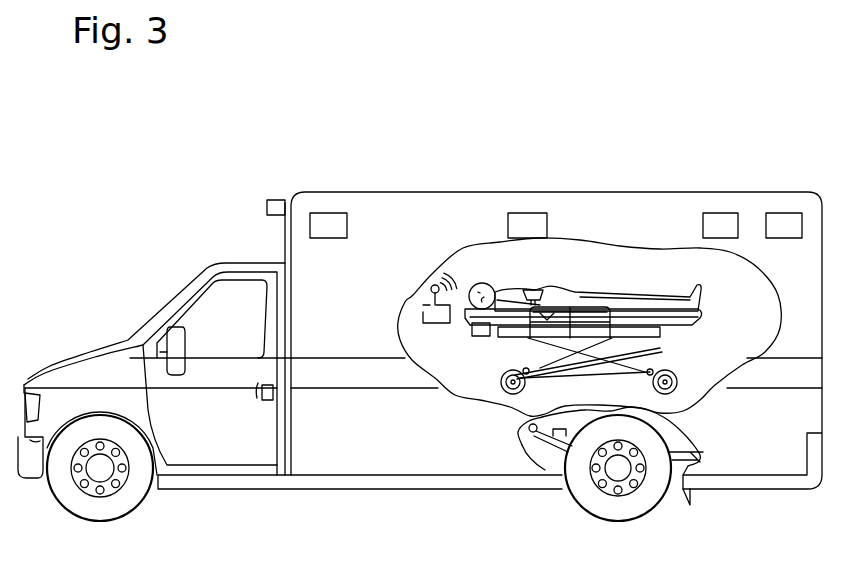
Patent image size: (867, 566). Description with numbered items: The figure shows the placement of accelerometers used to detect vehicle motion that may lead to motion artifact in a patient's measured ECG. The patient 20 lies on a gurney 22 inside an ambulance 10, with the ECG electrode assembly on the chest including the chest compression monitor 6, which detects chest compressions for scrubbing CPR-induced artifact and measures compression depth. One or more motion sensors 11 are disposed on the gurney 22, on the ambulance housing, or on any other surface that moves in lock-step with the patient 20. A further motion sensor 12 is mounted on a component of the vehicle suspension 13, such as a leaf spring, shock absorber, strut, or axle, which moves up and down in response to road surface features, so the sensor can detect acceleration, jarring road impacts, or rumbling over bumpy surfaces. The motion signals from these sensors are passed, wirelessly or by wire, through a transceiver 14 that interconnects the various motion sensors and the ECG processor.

The ambulance 10 is at (590, 192).
The chest compression monitor 6 is at (549, 290).
The patient 20 is at (636, 305).
The stretcher 22 is at (693, 328).
The motion sensors 11 is at (467, 337).
The transceiver 14 is at (579, 327).
The motion sensor 12 is at (582, 441).
The vehicle suspension 13 is at (590, 446).